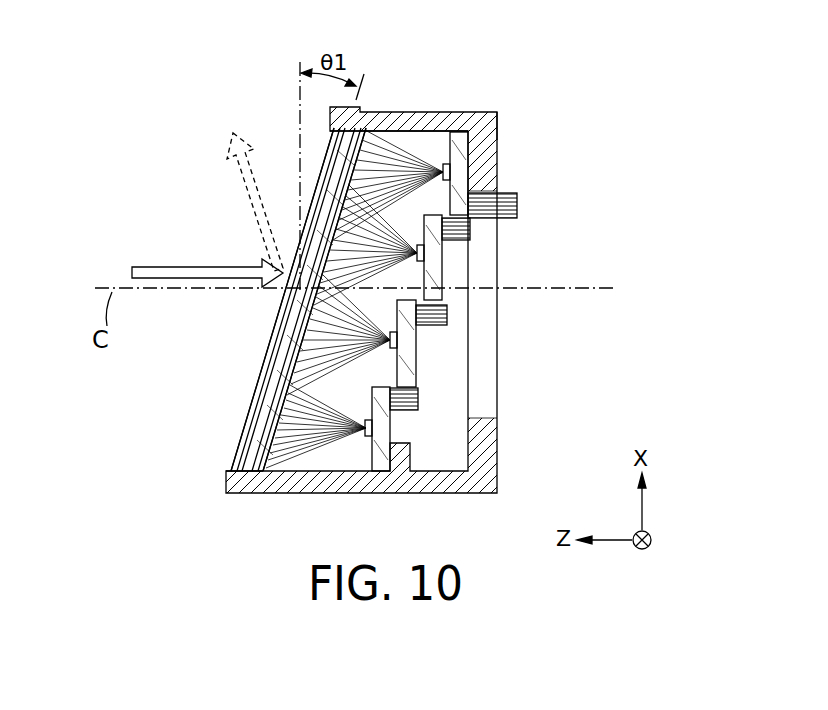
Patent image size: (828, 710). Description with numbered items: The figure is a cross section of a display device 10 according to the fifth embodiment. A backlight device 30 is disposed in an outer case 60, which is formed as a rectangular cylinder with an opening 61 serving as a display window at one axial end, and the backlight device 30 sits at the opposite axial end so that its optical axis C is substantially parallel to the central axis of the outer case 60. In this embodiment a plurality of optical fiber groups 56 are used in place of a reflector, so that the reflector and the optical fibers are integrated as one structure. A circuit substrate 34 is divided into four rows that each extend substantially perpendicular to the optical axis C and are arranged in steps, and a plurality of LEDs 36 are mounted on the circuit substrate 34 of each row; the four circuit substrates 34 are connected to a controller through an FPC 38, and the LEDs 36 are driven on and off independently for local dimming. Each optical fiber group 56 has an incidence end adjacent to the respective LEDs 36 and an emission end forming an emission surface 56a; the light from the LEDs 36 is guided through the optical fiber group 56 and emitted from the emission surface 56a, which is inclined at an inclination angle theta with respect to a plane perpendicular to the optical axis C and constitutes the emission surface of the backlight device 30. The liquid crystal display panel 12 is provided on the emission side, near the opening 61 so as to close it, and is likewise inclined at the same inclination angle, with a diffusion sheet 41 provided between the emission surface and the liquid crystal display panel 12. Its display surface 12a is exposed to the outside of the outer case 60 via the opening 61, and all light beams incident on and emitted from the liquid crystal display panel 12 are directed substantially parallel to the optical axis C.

The display device 10 is at (510, 78).
The liquid crystal display panel 12 is at (251, 400).
The display surface 12a is at (268, 366).
The backlight device 30 is at (418, 112).
The circuit substrate 34 is at (466, 146).
The LED 36 is at (452, 175).
The FPC 38 is at (518, 208).
The diffusion sheet 41 is at (395, 150).
The optical fiber group 56 is at (425, 300).
The emission surface 56a is at (288, 319).
The outer case 60 is at (302, 483).
The opening 61 is at (237, 471).